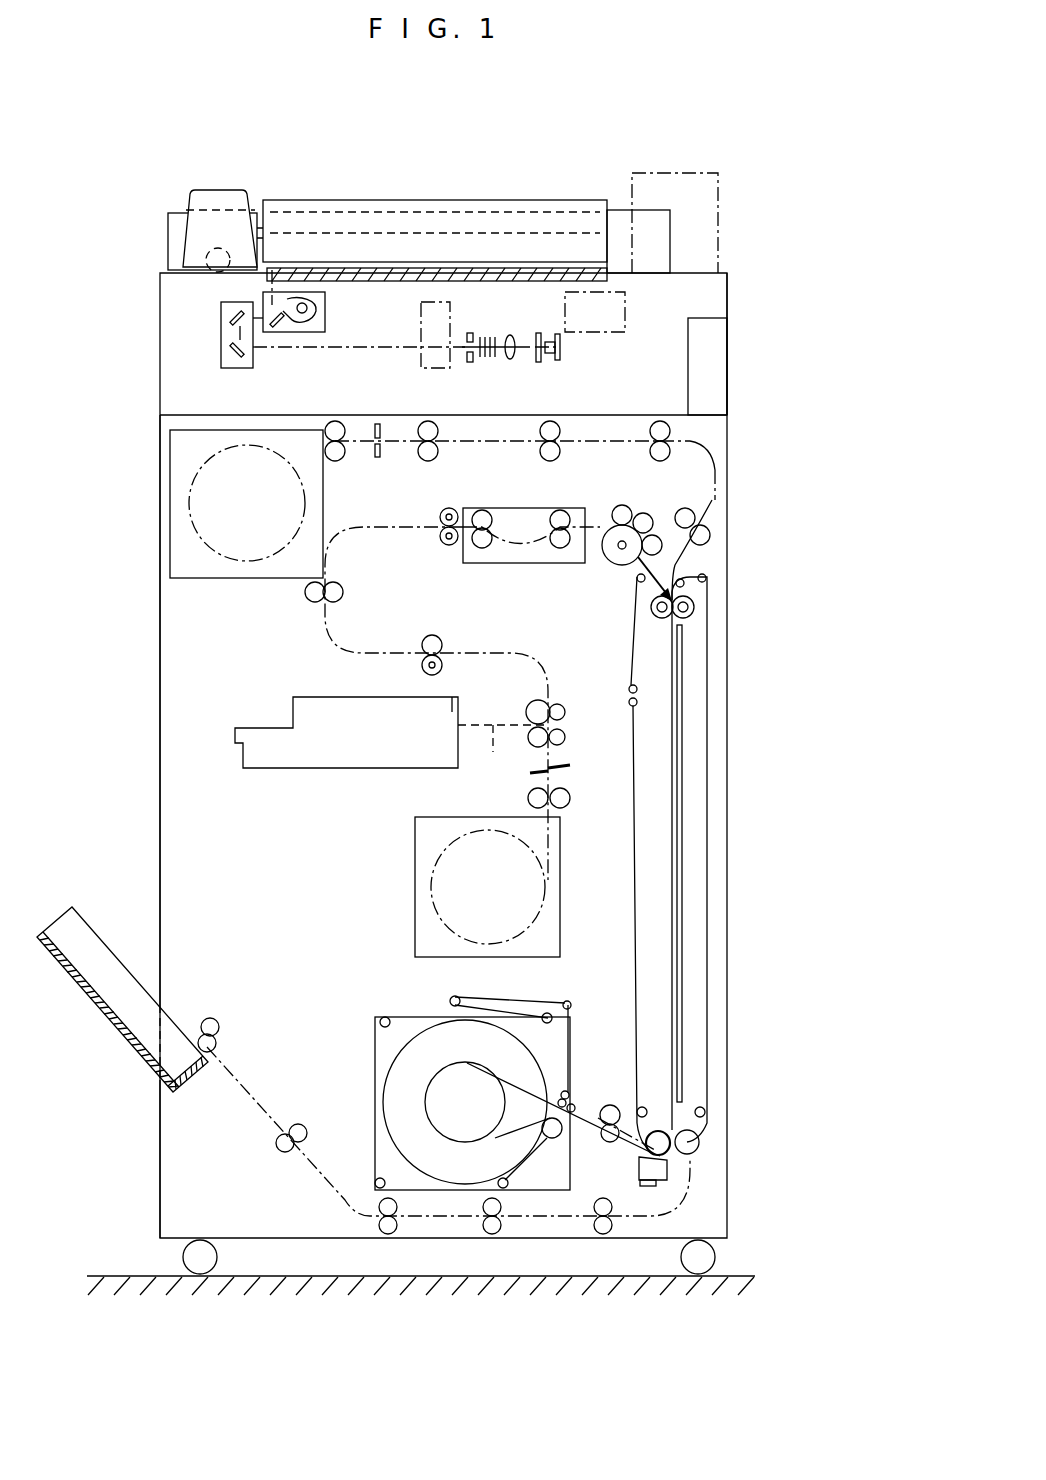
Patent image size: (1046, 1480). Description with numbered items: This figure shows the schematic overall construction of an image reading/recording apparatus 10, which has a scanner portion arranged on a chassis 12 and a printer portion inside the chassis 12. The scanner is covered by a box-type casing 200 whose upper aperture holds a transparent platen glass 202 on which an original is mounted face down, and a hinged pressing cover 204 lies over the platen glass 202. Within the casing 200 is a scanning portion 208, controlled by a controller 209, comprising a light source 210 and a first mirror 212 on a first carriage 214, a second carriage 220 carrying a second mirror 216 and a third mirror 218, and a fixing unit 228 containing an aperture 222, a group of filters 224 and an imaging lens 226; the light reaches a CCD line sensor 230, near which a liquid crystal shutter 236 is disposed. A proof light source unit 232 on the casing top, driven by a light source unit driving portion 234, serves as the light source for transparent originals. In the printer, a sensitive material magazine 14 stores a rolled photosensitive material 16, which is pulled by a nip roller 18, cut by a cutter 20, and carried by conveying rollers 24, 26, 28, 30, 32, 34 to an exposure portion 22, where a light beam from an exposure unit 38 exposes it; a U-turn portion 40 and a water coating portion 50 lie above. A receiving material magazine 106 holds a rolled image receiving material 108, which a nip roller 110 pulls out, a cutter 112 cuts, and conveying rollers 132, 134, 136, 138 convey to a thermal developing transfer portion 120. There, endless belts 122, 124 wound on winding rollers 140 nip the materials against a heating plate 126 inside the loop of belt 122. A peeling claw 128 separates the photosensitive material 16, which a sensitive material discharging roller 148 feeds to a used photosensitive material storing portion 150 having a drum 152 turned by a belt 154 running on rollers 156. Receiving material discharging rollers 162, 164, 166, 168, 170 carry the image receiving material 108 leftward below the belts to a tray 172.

The image reading/recording apparatus 10 is at (128, 404).
The chassis 12 is at (160, 553).
The sensitive material magazine 14 is at (414, 920).
The photosensitive material 16 is at (443, 855).
The nip roller 18 is at (570, 798).
The cutter 20 is at (570, 768).
The exposure portion 22 is at (566, 724).
The conveying roller 24 is at (566, 737).
The conveying roller 26 is at (557, 702).
The conveying roller 28 is at (432, 645).
The conveying roller 30 is at (339, 596).
The conveying roller 32 is at (618, 518).
The conveying roller 34 is at (652, 511).
The exposure unit 38 is at (312, 768).
The U-turn portion 40 is at (314, 656).
The water coating portion 50 is at (542, 576).
The receiving material magazine 106 is at (170, 505).
The image receiving material 108 is at (240, 575).
The nip roller 110 is at (336, 421).
The cutter 112 is at (378, 423).
The thermal developing transfer portion 120 is at (683, 865).
The endless belt 122 is at (708, 773).
The endless belt 124 is at (637, 852).
The heating plate 126 is at (682, 720).
The peeling claw 128 is at (637, 1168).
The conveying roller 132 is at (430, 417).
The conveying roller 134 is at (545, 452).
The conveying roller 136 is at (651, 451).
The conveying roller 138 is at (712, 538).
The winding rollers 140 is at (695, 607).
The sensitive material discharging roller 148 is at (610, 1105).
The used photosensitive material storing portion 150 is at (471, 1088).
The drum 152 is at (487, 1114).
The belt 154 is at (375, 1088).
The rollers 156 is at (566, 1003).
The receiving material discharging roller 162 is at (605, 1228).
The receiving material discharging roller 164 is at (496, 1226).
The receiving material discharging roller 166 is at (394, 1226).
The receiving material discharging roller 168 is at (282, 1152).
The receiving material discharging roller 170 is at (220, 1026).
The tray 172 is at (74, 990).
The casing 200 is at (727, 283).
The platen glass 202 is at (520, 277).
The pressing cover 204 is at (434, 203).
The scanning portion 208 is at (622, 364).
The controller 209 is at (727, 330).
The light source 210 is at (322, 300).
The first mirror 212 is at (280, 329).
The first carriage 214 is at (335, 322).
The second mirror 216 is at (224, 317).
The third mirror 218 is at (239, 357).
The second carriage 220 is at (218, 349).
The aperture 222 is at (470, 335).
The filters 224 is at (494, 338).
The imaging lens 226 is at (515, 358).
The fixing unit 228 is at (532, 322).
The CCD line sensor 230 is at (559, 345).
The proof light source unit 232 is at (236, 184).
The light source unit driving portion 234 is at (168, 213).
The liquid crystal shutter 236 is at (547, 358).